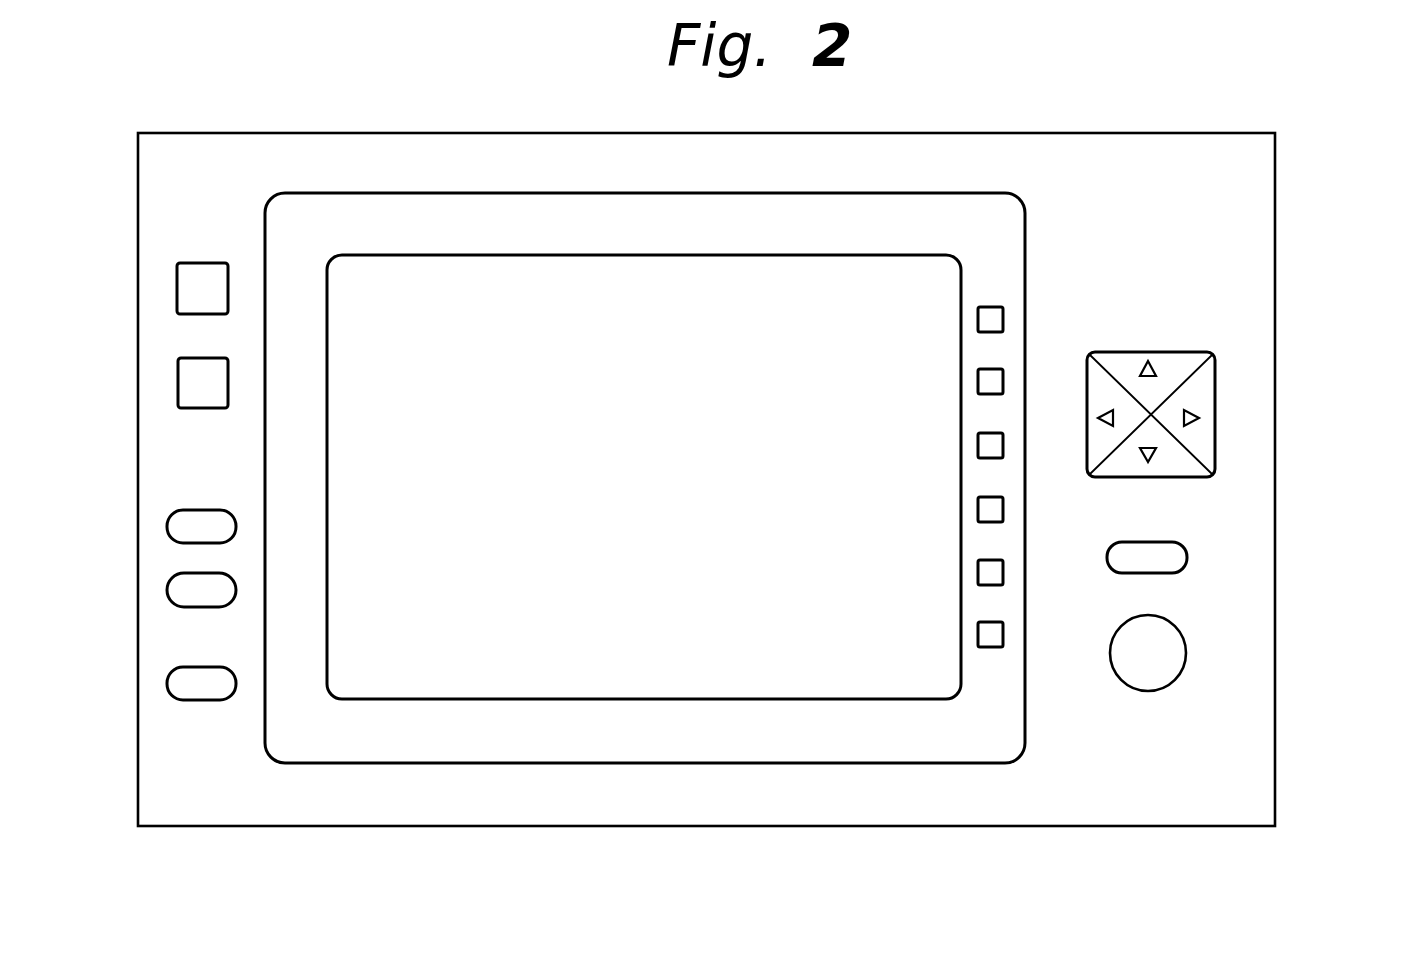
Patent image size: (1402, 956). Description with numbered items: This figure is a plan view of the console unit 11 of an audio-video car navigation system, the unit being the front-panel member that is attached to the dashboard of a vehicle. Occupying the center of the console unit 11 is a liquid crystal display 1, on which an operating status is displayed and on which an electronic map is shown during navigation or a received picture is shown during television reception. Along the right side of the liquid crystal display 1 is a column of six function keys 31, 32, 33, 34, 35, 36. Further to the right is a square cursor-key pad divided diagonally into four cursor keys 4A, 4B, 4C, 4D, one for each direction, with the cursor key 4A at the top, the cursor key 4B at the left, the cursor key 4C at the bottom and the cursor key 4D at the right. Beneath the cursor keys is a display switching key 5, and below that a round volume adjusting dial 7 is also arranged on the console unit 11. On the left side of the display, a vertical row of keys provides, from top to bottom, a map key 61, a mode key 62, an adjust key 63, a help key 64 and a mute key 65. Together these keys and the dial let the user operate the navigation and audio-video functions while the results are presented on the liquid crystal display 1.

The liquid crystal display 1 is at (748, 268).
The console unit 11 is at (1300, 180).
The function key 31 is at (997, 314).
The function key 32 is at (997, 378).
The function key 33 is at (999, 444).
The function key 34 is at (999, 509).
The function key 35 is at (999, 571).
The function key 36 is at (999, 633).
The cursor key 4A is at (1172, 352).
The cursor key 4B is at (1088, 392).
The cursor key 4C is at (1131, 468).
The cursor key 4D is at (1215, 429).
The display switching key 5 is at (1184, 557).
The map key 61 is at (203, 267).
The mode key 62 is at (203, 408).
The adjust key 63 is at (203, 510).
The help key 64 is at (203, 607).
The mute key 65 is at (203, 700).
The volume adjusting dial 7 is at (1182, 651).